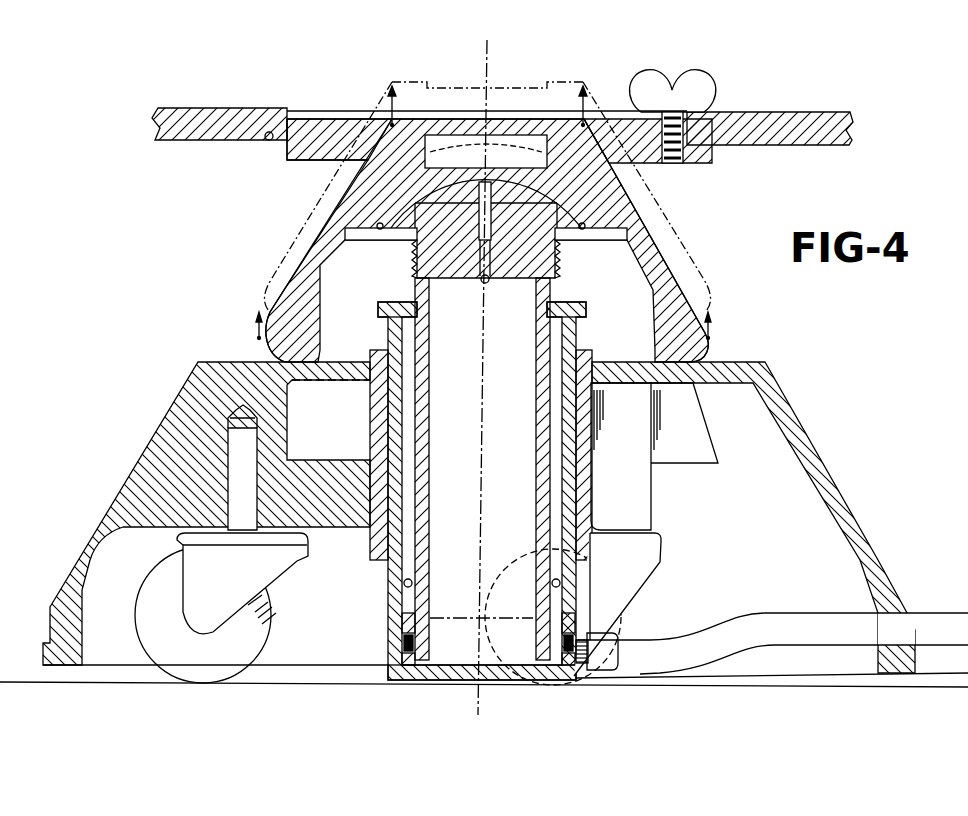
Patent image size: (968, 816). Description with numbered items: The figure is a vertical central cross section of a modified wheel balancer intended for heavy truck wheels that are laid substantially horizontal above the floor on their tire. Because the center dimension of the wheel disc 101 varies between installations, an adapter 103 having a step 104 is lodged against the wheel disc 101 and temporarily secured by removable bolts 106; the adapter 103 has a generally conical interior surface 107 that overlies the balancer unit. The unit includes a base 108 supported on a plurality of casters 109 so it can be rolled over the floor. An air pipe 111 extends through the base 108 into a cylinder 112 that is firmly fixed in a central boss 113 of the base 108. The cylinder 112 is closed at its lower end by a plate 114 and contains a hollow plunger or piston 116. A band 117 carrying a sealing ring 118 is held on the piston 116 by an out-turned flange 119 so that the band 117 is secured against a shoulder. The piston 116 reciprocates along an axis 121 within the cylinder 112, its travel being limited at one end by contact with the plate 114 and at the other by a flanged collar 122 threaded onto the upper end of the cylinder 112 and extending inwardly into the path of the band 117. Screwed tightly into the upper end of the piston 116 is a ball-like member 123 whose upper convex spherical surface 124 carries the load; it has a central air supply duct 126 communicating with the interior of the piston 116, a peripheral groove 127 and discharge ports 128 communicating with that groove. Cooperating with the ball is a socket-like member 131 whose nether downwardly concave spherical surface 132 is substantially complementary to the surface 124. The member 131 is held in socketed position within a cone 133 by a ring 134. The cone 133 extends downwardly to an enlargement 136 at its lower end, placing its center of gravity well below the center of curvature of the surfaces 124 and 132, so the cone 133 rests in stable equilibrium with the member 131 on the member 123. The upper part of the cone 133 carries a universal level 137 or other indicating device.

The truck wheel 101 is at (808, 142).
The adapter 103 is at (712, 160).
The step 104 is at (262, 140).
The removable bolts 106 is at (703, 84).
The conical interior surface 107 is at (352, 137).
The base 108 is at (847, 523).
The casters 109 is at (623, 618).
The air pipe 111 is at (805, 614).
The cylinder 112 is at (392, 601).
The central boss 113 is at (372, 548).
The plate 114 is at (497, 674).
The hollow plunger or piston 116 is at (547, 431).
The band 117 is at (414, 619).
The sealing ring 118 is at (410, 637).
The out-turned flange 119 is at (420, 664).
The axis 121 is at (478, 388).
The flanged collar 122 is at (582, 312).
The ball-like member 123 is at (540, 269).
The upper convex spherical surface 124 is at (530, 193).
The central air supply duct 126 is at (484, 282).
The peripheral groove 127 is at (403, 245).
The discharge ports 128 is at (566, 235).
The socket-like member 131 is at (373, 195).
The nether downwardly concave spherical surface 132 is at (380, 232).
The cone 133 is at (330, 234).
The ring 134 is at (630, 233).
The enlargement 136 is at (262, 352).
The universal level 137 is at (507, 135).